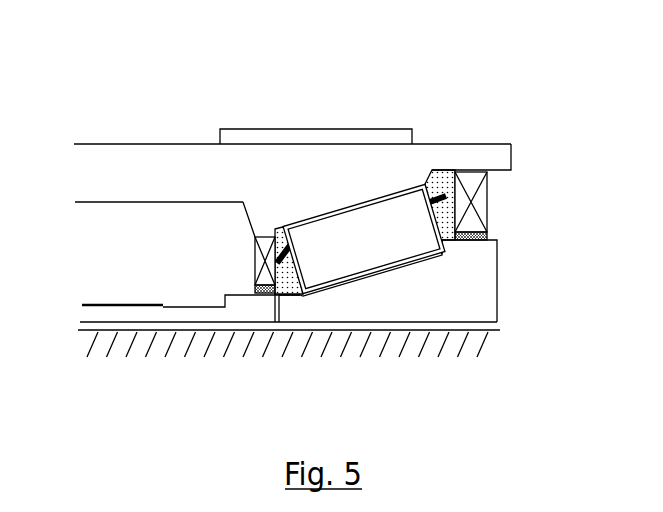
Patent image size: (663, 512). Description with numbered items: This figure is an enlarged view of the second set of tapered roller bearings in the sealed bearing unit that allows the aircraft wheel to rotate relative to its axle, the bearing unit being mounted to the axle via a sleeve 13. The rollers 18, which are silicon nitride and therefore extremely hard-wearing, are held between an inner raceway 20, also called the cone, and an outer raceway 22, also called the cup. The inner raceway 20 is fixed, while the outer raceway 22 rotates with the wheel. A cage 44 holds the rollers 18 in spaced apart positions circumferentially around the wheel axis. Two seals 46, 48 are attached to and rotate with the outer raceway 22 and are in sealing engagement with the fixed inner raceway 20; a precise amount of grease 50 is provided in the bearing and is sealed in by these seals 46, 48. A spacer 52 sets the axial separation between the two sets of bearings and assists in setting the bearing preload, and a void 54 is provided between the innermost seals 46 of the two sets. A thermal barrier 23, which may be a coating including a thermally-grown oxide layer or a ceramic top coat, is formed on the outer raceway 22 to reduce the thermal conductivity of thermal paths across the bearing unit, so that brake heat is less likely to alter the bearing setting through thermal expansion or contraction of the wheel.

The sleeve 13 is at (490, 338).
The rollers 18 is at (358, 215).
The inner raceway 20 is at (485, 279).
The outer raceway 22 is at (425, 155).
The thermal barrier 23 is at (308, 128).
The cage 44 is at (268, 241).
The seal 46 is at (255, 280).
The seal 48 is at (490, 197).
The grease 50 is at (280, 226).
The spacer 52 is at (97, 313).
The void 54 is at (130, 259).